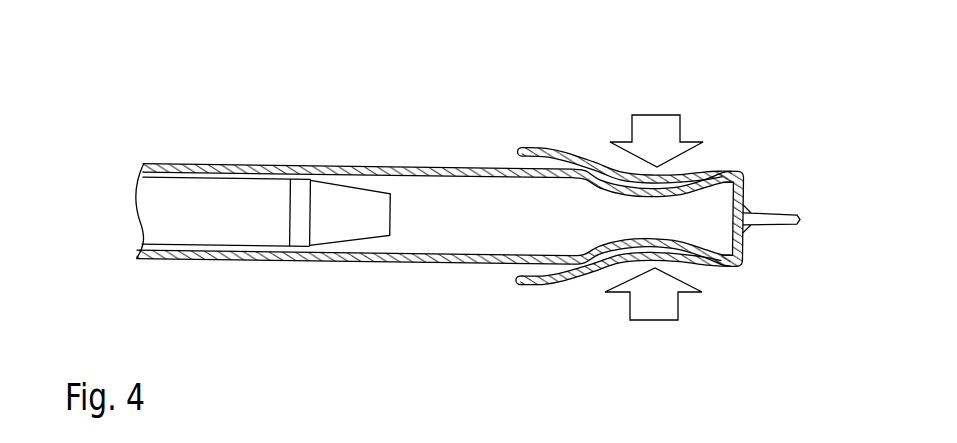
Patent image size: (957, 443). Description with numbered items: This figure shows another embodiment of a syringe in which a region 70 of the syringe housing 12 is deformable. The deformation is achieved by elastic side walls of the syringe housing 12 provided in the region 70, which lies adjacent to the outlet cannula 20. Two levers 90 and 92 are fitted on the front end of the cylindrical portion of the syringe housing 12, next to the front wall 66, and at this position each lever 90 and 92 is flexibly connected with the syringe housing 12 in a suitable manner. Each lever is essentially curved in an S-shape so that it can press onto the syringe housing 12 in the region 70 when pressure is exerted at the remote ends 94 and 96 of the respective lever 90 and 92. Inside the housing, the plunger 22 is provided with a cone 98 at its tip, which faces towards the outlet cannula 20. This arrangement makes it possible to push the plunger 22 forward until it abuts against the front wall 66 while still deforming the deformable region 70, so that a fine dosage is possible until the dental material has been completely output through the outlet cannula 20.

The syringe housing 12 is at (414, 170).
The plunger 22 is at (216, 205).
The cone 98 is at (345, 222).
The lever 90 is at (592, 166).
The lever 92 is at (588, 270).
The remote end 94 is at (536, 150).
The remote end 96 is at (534, 284).
The front wall 66 is at (748, 197).
The outlet cannula 20 is at (780, 224).
The region 70 is at (687, 96).